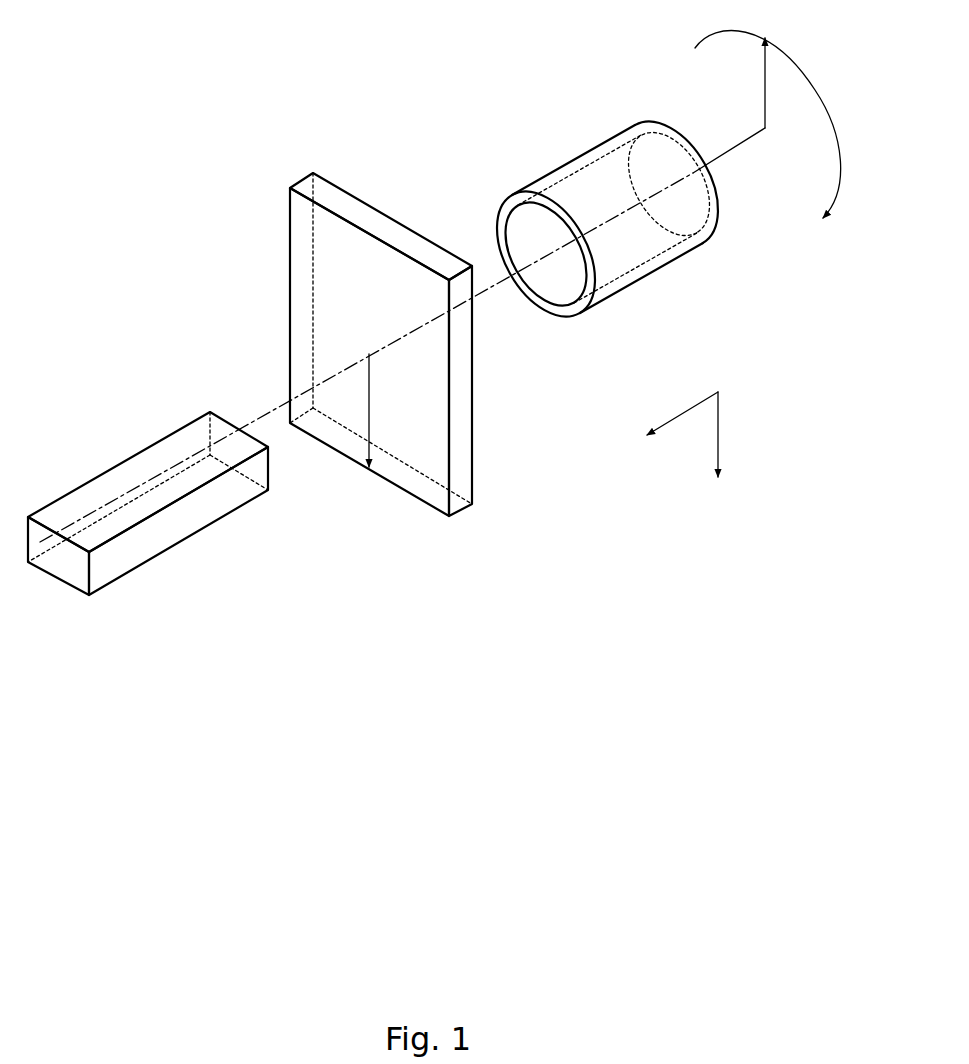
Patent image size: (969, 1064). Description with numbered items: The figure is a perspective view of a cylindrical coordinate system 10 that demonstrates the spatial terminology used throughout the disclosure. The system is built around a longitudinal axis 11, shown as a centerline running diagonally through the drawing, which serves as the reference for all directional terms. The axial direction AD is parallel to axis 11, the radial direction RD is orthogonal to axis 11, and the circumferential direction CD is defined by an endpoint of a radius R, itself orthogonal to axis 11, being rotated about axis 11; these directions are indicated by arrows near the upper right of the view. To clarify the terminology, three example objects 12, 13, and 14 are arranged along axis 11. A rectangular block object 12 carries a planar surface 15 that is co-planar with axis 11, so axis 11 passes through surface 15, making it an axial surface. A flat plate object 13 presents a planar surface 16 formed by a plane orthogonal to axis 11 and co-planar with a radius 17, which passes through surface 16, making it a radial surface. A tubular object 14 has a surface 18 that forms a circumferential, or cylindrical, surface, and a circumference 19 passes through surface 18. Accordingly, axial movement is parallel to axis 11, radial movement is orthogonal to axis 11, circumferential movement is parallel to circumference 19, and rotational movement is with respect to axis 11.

The cylindrical coordinate system 10 is at (245, 222).
The longitudinal axis 11 is at (710, 160).
The object 12 is at (148, 532).
The object 13 is at (381, 366).
The object 14 is at (574, 226).
The axial surface 15 is at (110, 485).
The radial surface 16 is at (305, 303).
The radius 17 is at (370, 407).
The circumferential surface 18 is at (575, 157).
The circumference 19 is at (490, 215).
The radius R is at (763, 82).
The circumferential direction CD is at (817, 88).
The axial direction AD is at (682, 412).
The radial direction RD is at (720, 432).